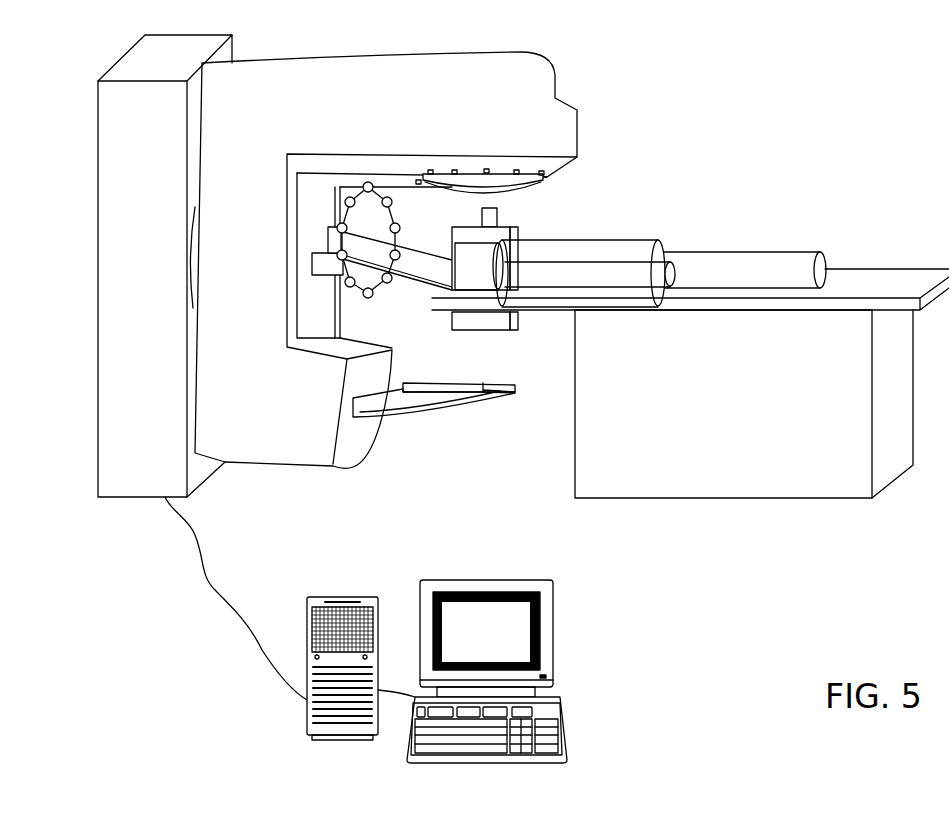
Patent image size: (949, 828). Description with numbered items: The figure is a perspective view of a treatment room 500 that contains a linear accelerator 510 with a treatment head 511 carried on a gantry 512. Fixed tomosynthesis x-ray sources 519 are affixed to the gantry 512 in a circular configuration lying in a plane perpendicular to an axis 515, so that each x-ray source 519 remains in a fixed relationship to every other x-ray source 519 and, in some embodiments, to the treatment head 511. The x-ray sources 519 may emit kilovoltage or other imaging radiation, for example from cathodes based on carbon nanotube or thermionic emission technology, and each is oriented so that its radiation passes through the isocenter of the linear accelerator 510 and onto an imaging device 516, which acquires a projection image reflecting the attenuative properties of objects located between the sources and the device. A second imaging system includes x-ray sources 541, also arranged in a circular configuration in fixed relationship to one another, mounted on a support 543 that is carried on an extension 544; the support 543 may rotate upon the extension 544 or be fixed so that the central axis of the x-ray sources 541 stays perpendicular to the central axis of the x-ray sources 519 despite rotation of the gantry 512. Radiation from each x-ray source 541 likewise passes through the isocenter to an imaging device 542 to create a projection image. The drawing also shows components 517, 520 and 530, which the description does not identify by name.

The treatment room 500 is at (782, 101).
The linear accelerator 510 is at (608, 102).
The treatment head 511 is at (558, 163).
The gantry 512 is at (363, 55).
The axis 515 is at (483, 222).
The imaging device 516 is at (517, 392).
The detector support arm 517 is at (412, 417).
The x-ray sources 519 is at (548, 180).
The patient support table 520 is at (880, 285).
The phantom / cylindrical target 530 is at (620, 238).
The x-ray sources 541 is at (398, 240).
The imaging device 542 is at (520, 312).
The support 543 is at (430, 285).
The extension 544 is at (308, 272).